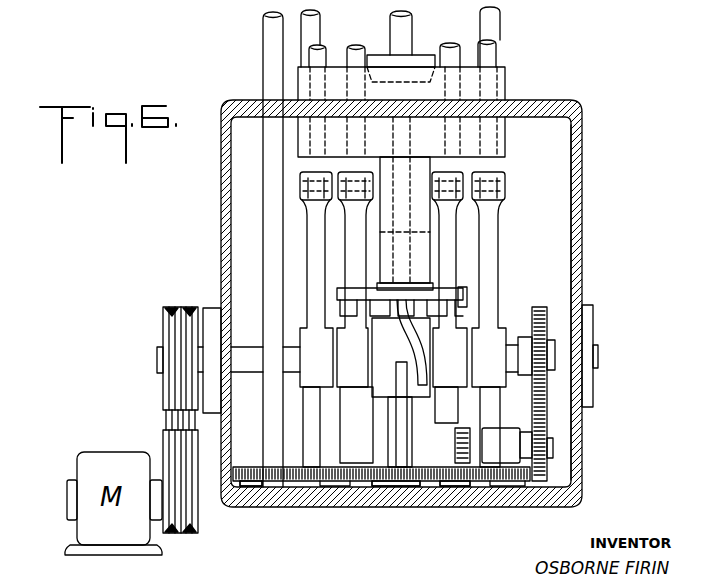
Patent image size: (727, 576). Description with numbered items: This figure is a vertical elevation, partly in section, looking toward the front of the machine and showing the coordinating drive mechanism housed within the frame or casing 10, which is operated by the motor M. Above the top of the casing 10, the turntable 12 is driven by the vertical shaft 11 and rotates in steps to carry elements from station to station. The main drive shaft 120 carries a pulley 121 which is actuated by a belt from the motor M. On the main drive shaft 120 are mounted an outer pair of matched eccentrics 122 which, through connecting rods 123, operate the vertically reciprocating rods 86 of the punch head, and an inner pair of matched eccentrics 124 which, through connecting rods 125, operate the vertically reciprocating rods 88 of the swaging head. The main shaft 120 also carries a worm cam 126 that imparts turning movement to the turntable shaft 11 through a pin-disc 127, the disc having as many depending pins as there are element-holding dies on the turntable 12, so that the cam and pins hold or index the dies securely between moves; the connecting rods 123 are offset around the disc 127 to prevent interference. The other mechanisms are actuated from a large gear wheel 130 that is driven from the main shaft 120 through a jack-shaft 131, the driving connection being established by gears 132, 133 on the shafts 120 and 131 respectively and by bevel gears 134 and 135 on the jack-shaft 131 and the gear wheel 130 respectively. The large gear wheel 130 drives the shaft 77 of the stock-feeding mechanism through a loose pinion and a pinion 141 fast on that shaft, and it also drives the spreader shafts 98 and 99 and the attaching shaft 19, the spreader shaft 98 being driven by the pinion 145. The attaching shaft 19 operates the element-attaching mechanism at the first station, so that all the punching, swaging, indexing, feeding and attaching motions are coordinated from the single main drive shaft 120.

The frame or casing 10 is at (582, 133).
The vertical shaft 11 is at (440, 232).
The turntable 12 is at (410, 60).
The attaching shaft 19 is at (402, 20).
The shaft of the stock-feeding mechanism 77 is at (395, 445).
The vertically reciprocating rods 86 is at (322, 50).
The vertically reciprocating rods 88 is at (360, 45).
The spreader shaft 98 is at (268, 52).
The spreader shaft 99 is at (305, 23).
The main drive shaft 120 is at (553, 352).
The pulley 121 is at (163, 333).
The outer pair of matched eccentrics 122 is at (297, 337).
The connecting rods 123 is at (315, 253).
The inner pair of matched eccentrics 124 is at (370, 386).
The connecting rods 125 is at (353, 232).
The worm cam 126 is at (405, 403).
The pin-disc 127 is at (465, 292).
The large gear wheel 130 is at (327, 490).
The jack-shaft 131 is at (553, 453).
The gear 132 is at (545, 387).
The gear 133 is at (545, 423).
The bevel gear 134 is at (478, 490).
The bevel gear 135 is at (440, 490).
The pinion 141 is at (370, 490).
The pinion 145 is at (253, 490).